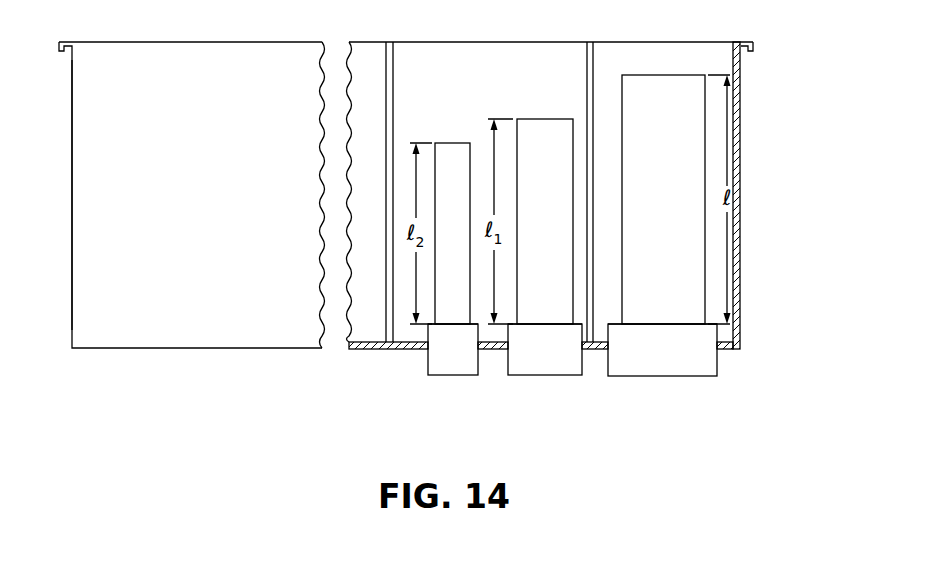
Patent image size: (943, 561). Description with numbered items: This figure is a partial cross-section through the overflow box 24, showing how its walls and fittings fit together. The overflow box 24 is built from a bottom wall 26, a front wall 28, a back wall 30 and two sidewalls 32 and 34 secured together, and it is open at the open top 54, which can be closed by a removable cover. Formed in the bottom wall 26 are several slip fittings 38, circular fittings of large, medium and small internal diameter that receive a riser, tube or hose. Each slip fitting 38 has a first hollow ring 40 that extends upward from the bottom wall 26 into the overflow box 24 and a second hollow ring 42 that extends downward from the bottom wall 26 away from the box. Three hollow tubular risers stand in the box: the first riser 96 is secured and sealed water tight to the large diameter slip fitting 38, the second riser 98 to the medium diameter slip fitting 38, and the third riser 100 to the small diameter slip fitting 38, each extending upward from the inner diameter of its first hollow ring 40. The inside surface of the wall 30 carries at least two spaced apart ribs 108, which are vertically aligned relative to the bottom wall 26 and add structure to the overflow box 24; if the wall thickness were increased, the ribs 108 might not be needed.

The overflow box 24 is at (808, 29).
The bottom wall 26 is at (388, 350).
The front wall 28 is at (185, 207).
The back wall 30 is at (472, 82).
The sidewall 32 is at (72, 178).
The sidewall 34 is at (740, 173).
The slip fitting 38 is at (428, 299).
The first hollow ring 40 is at (436, 331).
The second hollow ring 42 is at (458, 366).
The open top 54 is at (701, 50).
The first riser 96 is at (653, 202).
The second riser 98 is at (538, 202).
The third riser 100 is at (438, 202).
The rib 108 is at (393, 65).